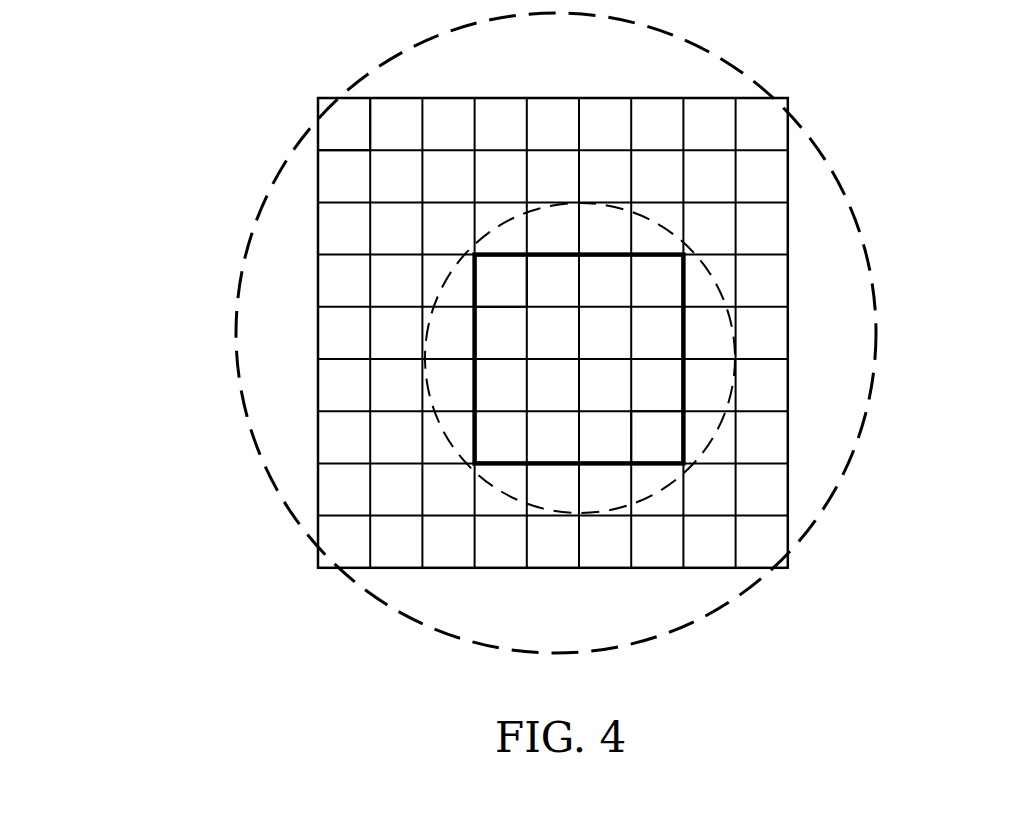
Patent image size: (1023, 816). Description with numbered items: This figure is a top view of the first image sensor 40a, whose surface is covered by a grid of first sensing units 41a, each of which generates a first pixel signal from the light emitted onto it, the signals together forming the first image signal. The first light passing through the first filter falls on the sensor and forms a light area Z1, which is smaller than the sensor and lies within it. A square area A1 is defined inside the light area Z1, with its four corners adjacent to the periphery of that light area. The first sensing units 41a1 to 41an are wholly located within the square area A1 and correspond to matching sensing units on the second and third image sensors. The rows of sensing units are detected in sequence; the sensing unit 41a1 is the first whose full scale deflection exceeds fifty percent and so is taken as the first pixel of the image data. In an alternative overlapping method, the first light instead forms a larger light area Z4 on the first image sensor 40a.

The first image sensor 40a is at (877, 57).
The first sensing units 41a is at (330, 142).
The first sensing unit 41a1 is at (480, 292).
The first sensing unit 41an is at (670, 445).
The square area A1 is at (685, 402).
The light area Z1 is at (700, 263).
The light area Z4 is at (875, 313).